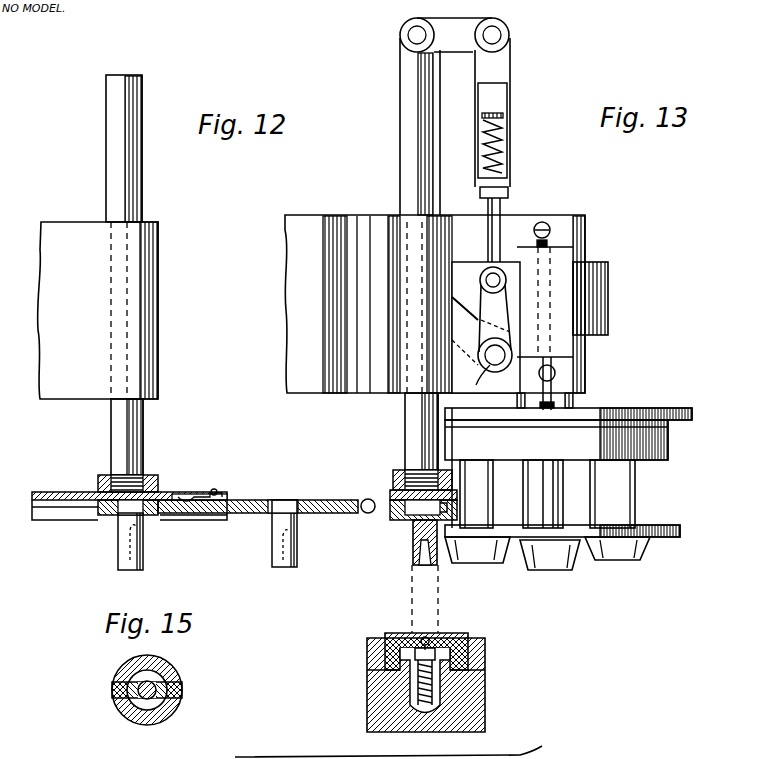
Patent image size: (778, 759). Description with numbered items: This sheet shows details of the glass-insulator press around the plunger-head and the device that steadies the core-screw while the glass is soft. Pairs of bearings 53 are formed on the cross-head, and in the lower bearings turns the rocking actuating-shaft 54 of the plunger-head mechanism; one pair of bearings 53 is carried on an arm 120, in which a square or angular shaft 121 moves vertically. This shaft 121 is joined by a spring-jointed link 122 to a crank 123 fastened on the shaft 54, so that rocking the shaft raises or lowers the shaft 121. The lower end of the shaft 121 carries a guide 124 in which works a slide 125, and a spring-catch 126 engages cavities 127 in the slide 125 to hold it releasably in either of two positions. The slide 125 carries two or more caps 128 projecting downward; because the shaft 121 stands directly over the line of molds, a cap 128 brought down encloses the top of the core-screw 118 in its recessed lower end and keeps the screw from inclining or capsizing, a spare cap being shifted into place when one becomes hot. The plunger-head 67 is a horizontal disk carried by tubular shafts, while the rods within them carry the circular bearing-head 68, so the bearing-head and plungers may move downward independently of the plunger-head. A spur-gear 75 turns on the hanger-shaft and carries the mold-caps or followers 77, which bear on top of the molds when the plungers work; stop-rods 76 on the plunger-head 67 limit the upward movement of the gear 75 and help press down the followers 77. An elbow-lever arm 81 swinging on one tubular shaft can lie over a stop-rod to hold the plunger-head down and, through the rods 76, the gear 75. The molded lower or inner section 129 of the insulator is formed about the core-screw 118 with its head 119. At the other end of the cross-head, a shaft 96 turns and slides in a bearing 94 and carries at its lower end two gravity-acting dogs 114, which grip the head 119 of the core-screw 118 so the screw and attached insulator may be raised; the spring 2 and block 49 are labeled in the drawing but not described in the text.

In FIG. 13, the spring 2 is at (505, 140).
In FIG. 13, the block 49 is at (485, 698).
In FIG. 13, the bearings 53 is at (573, 246).
In FIG. 13, the actuating-shaft 54 is at (474, 375).
In FIG. 13, the plunger-head 67 is at (692, 412).
In FIG. 13, the bearing-head 68 is at (668, 443).
In FIG. 13, the spur-gear 75 is at (680, 530).
In FIG. 13, the stop-rods 76 is at (556, 500).
In FIG. 13, the mold-caps or followers 77 is at (625, 560).
In FIG. 13, the arm 81 is at (608, 275).
In FIG. 13, the bearing 94 is at (530, 755).
In FIG. 15, the shaft 96 is at (140, 722).
In FIG. 15, the dogs 114 is at (112, 690).
In FIG. 13, the core-screw 118 is at (412, 676).
In FIG. 13, the head 119 is at (429, 639).
In FIG. 15, the head 119 is at (156, 696).
In FIG. 12, the arm 120 is at (98, 310).
In FIG. 13, the arm 120 is at (412, 348).
In FIG. 12, the angular shaft 121 is at (137, 198).
In FIG. 13, the angular shaft 121 is at (413, 158).
In FIG. 13, the spring-jointed link 122 is at (511, 162).
In FIG. 13, the crank 123 is at (500, 320).
In FIG. 12, the guide 124 is at (66, 493).
In FIG. 13, the guide 124 is at (392, 492).
In FIG. 12, the slide 125 is at (246, 517).
In FIG. 13, the slide 125 is at (398, 518).
In FIG. 12, the spring-catch 126 is at (196, 494).
In FIG. 12, the cavities 127 is at (201, 516).
In FIG. 12, the caps 128 is at (138, 560).
In FIG. 13, the caps 128 is at (412, 553).
In FIG. 13, the lower or inner section of the insulator 129 is at (470, 665).